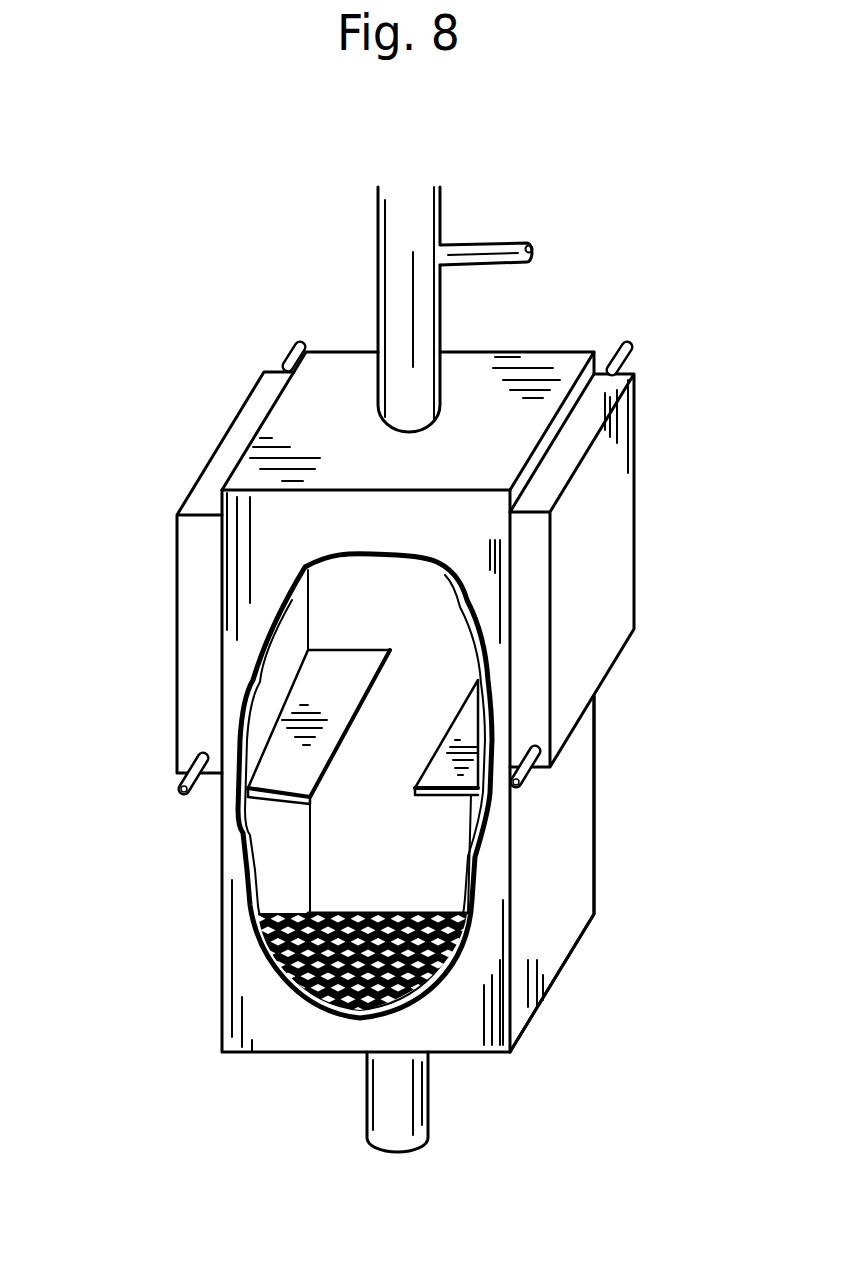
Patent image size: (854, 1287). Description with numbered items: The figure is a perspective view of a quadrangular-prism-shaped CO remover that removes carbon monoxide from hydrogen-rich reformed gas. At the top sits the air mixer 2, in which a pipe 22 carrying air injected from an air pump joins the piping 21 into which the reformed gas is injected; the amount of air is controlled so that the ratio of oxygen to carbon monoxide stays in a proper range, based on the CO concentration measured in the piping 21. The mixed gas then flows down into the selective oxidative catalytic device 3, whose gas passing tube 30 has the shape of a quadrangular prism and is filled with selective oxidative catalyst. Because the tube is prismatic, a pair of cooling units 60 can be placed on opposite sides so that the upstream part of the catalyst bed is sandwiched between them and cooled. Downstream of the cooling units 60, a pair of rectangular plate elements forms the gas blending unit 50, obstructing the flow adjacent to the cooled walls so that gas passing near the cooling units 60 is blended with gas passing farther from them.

The air mixer 2 is at (422, 294).
The piping 21 is at (397, 305).
The pipe 22 is at (495, 248).
The selective oxidative catalytic device 3 is at (132, 708).
The gas passing tube 30 is at (572, 836).
The gas blending unit 50 is at (408, 804).
The cooling unit 60 is at (193, 571).